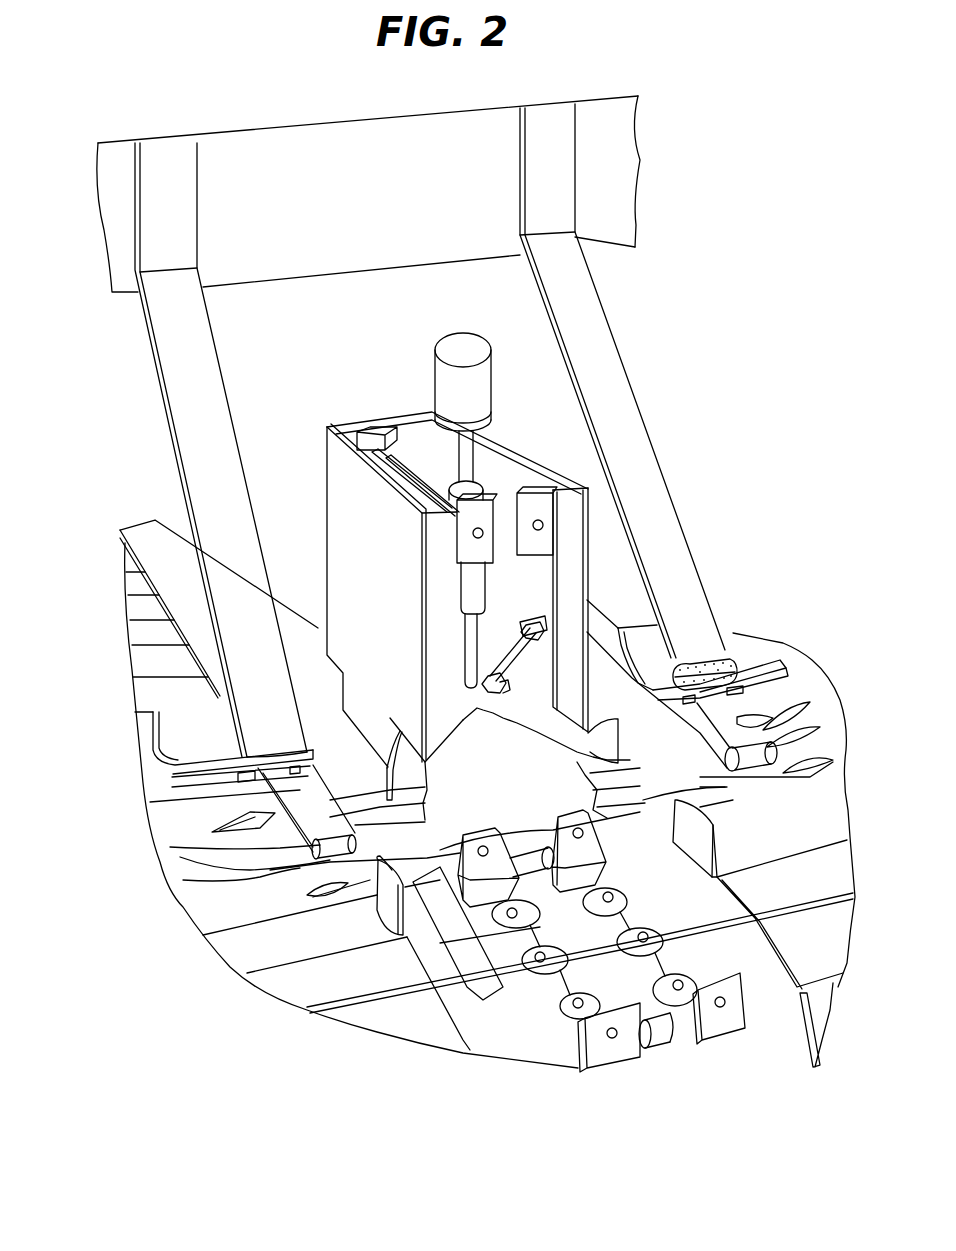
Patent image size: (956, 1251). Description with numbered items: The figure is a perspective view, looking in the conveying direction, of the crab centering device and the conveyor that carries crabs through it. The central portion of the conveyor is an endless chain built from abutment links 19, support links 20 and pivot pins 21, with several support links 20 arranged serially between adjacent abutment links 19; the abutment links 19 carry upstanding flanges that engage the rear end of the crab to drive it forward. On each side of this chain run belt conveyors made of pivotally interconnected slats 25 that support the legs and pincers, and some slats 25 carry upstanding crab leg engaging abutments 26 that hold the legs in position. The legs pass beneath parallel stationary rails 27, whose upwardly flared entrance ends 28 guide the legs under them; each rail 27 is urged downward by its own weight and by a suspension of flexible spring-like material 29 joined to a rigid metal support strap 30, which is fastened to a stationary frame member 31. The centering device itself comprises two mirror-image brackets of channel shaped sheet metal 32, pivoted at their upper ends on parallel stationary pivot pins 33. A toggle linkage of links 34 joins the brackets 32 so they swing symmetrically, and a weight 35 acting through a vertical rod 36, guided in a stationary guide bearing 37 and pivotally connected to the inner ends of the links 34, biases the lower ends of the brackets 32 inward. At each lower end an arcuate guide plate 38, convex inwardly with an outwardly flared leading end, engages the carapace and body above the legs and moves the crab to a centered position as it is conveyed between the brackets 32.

The abutment links 19 is at (740, 1015).
The support links 20 is at (645, 930).
The pivot pins 21 is at (663, 1042).
The slats 25 is at (367, 991).
The crab leg engaging abutments 26 is at (385, 905).
The rails 27 is at (182, 598).
The flared entrance ends 28 is at (762, 755).
The flexible spring-like material 29 is at (742, 677).
The support strap 30 is at (237, 530).
The stationary frame member 31 is at (370, 242).
The channel shaped sheet metal brackets 32 is at (335, 455).
The stationary pivot pins 33 is at (478, 534).
The links 34 is at (512, 652).
The weight 35 is at (470, 355).
The vertical rod 36 is at (470, 450).
The stationary guide bearing 37 is at (480, 490).
The arcuate guide plate 38 is at (392, 770).